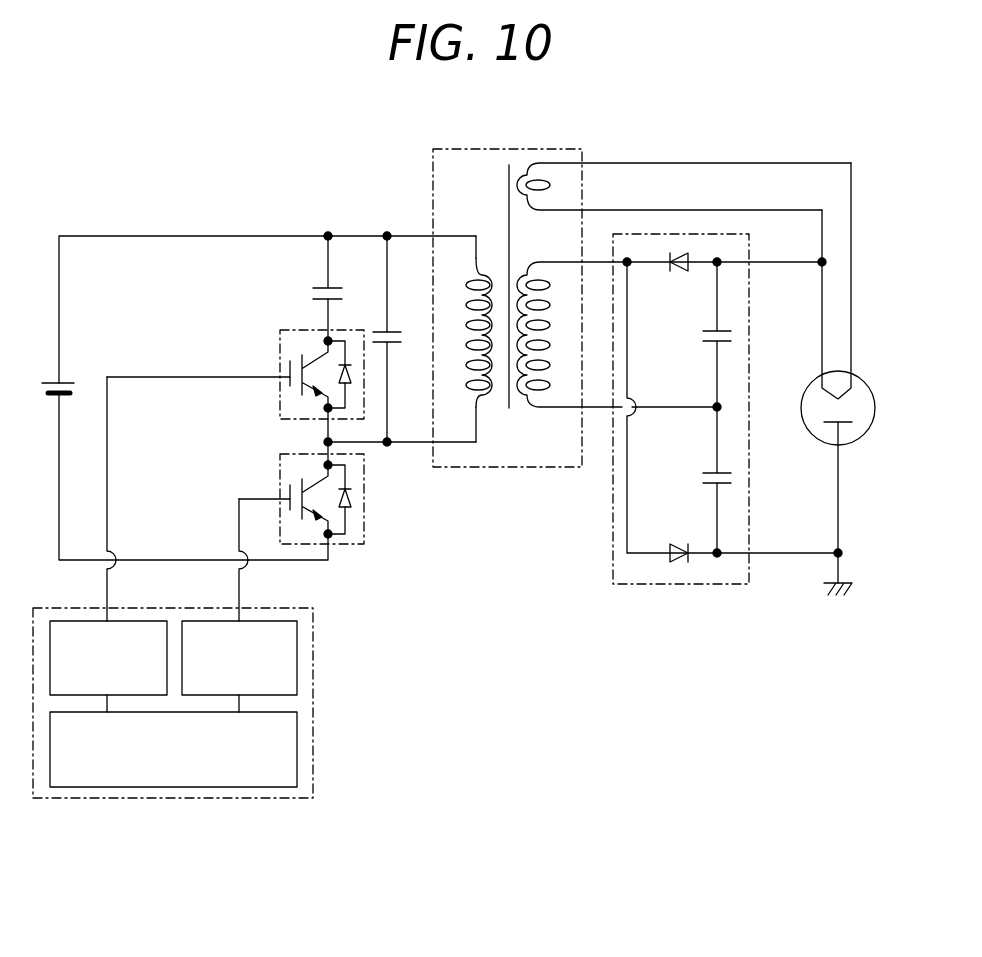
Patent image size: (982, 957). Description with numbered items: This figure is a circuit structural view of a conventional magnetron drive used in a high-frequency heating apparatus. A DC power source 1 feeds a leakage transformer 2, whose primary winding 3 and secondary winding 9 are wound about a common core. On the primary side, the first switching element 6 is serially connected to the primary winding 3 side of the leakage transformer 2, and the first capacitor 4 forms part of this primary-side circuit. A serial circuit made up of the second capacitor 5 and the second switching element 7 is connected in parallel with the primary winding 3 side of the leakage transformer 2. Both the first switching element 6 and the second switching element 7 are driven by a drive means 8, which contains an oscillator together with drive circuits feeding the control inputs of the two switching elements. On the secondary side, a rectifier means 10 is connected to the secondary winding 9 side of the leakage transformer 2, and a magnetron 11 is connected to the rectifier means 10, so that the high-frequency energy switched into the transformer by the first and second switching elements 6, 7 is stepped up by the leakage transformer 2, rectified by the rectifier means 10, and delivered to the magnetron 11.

The DC power source 1 is at (76, 382).
The leakage transformer 2 is at (642, 358).
The primary winding 3 is at (473, 352).
The first capacitor 4 is at (400, 343).
The second capacitor 5 is at (313, 290).
The first switching element 6 is at (364, 519).
The second switching element 7 is at (280, 362).
The drive means 8 is at (313, 690).
The secondary winding 9 is at (550, 340).
The rectifier means 10 is at (670, 584).
The magnetron 11 is at (818, 438).